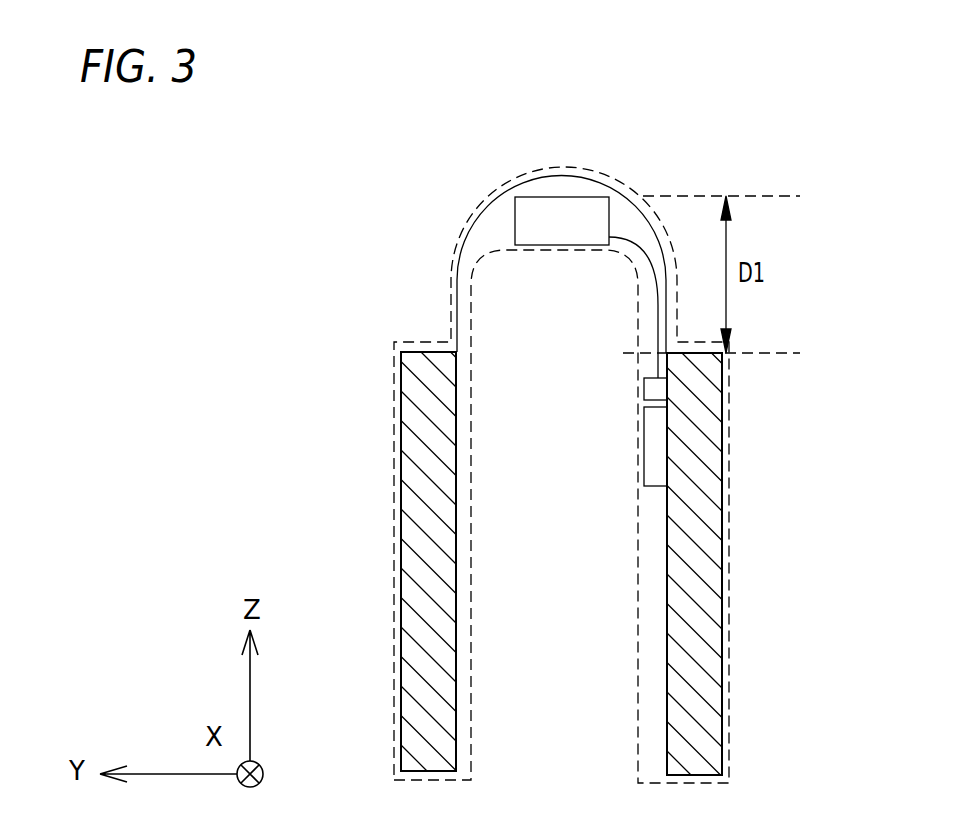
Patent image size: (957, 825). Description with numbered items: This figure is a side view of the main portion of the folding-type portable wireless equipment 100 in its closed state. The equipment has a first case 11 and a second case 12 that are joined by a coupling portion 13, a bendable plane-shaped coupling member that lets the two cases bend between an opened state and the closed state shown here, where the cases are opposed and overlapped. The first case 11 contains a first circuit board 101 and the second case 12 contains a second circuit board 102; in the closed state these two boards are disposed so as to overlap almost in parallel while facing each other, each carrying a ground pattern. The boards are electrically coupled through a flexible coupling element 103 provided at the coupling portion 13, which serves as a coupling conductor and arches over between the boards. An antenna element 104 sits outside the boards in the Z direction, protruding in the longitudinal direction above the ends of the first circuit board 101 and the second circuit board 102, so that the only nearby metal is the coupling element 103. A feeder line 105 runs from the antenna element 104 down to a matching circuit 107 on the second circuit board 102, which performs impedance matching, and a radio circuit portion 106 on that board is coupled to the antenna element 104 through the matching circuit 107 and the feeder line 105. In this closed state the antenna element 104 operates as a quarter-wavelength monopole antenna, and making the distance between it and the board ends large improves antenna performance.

The folding-type portable wireless equipment 100 is at (747, 140).
The first case 11 is at (395, 523).
The second case 12 is at (730, 590).
The coupling portion 13 is at (470, 293).
The first circuit board 101 is at (425, 398).
The second circuit board 102 is at (693, 513).
The flexible coupling element 103 is at (457, 280).
The antenna element 104 is at (553, 213).
The feeder line 105 is at (658, 328).
The radio circuit portion 106 is at (655, 404).
The matching circuit 107 is at (648, 392).